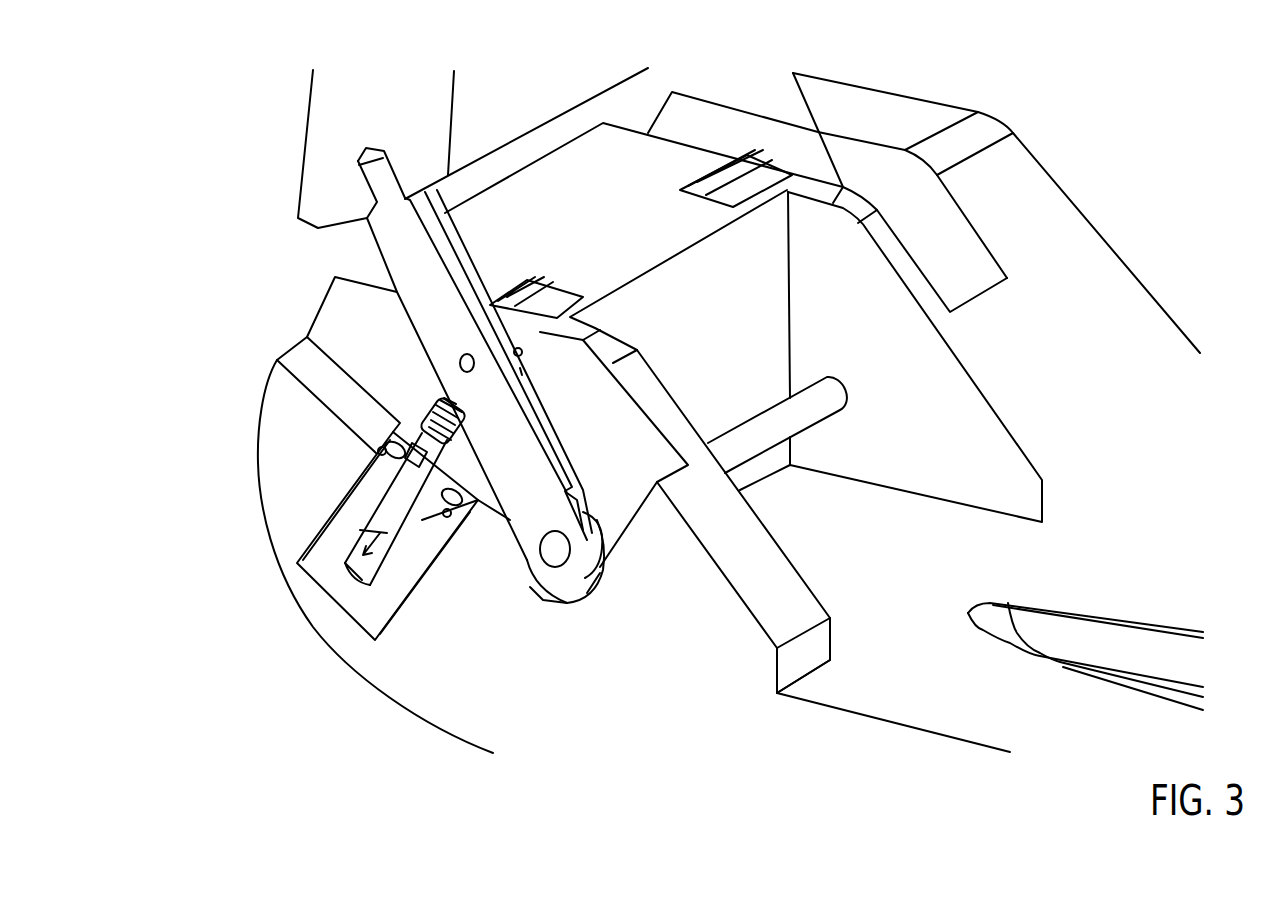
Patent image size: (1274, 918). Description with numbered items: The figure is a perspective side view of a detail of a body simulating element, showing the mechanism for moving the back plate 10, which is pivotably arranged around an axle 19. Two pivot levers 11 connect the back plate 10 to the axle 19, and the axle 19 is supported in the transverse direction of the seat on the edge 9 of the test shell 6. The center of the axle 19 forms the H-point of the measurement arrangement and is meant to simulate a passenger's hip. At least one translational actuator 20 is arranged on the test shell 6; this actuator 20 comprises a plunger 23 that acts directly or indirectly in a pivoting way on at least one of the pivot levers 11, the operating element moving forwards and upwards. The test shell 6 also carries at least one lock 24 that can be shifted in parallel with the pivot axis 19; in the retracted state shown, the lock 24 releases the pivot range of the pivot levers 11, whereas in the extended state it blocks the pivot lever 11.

The test shell 6 is at (432, 728).
The edge 9 is at (627, 483).
The back plate 10 is at (488, 100).
The pivot lever 11 is at (392, 240).
The axle 19 is at (830, 395).
The translational actuator 20 is at (340, 613).
The plunger 23 is at (367, 470).
The lock 24 is at (520, 297).